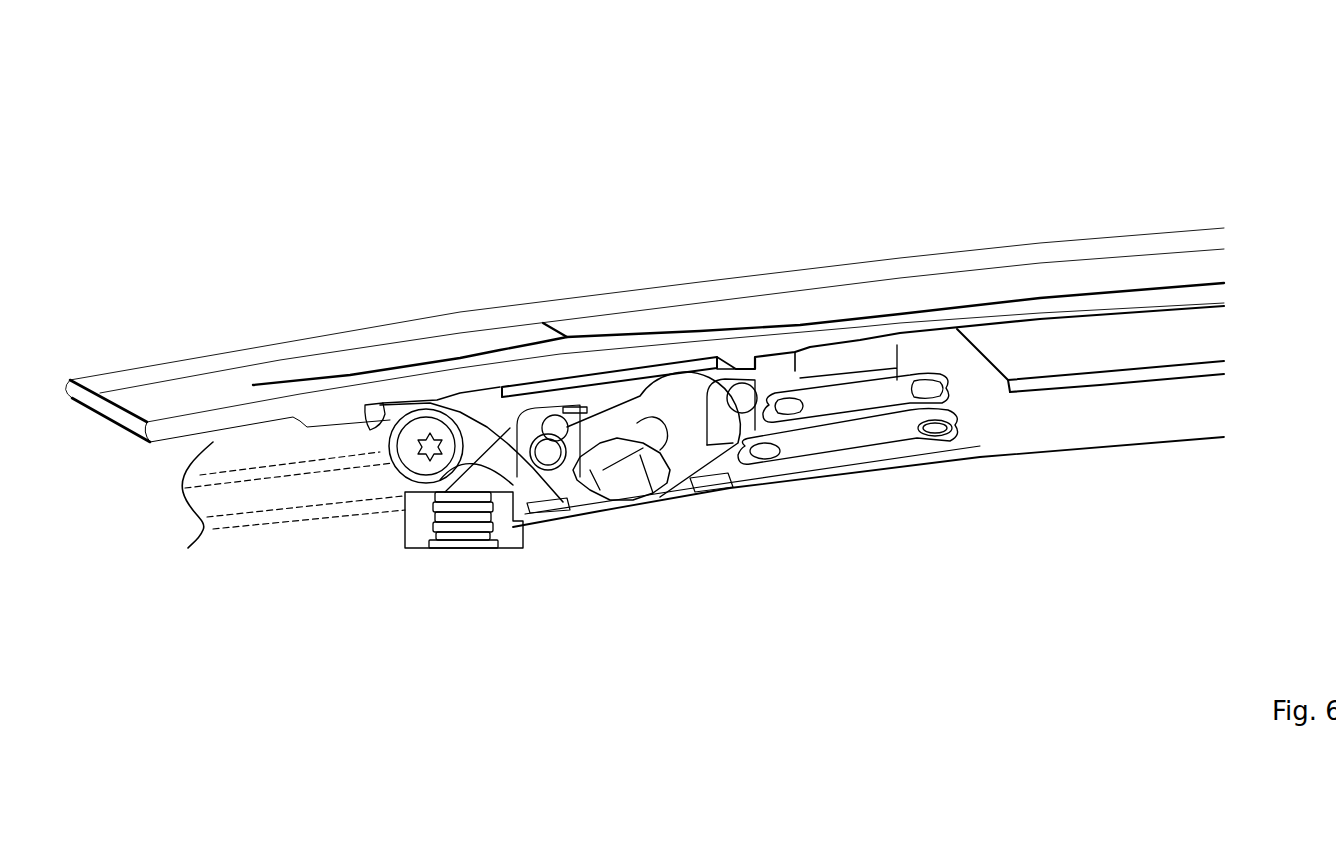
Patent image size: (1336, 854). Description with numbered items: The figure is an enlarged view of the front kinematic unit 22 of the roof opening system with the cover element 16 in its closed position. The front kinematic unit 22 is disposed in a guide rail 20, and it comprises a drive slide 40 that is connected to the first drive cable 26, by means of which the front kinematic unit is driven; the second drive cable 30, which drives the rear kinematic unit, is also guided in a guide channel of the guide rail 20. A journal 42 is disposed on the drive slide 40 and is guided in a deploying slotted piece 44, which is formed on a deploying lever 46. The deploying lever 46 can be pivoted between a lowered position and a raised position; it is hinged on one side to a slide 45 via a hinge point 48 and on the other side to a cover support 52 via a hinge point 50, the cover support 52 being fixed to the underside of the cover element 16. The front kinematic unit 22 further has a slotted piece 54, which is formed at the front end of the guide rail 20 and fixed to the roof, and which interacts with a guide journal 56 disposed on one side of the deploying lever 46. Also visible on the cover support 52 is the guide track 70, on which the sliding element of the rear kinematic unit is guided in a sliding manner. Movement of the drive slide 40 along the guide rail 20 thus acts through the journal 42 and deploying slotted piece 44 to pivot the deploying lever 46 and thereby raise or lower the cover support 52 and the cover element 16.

The cover element 16 is at (587, 300).
The guide rail 20 is at (618, 512).
The front kinematic unit 22 is at (718, 498).
The first drive cable 26 is at (213, 475).
The second drive cable 30 is at (332, 512).
The drive slide 40 is at (827, 363).
The journal 42 is at (553, 420).
The deploying slotted piece 44 is at (587, 405).
The slide 45 is at (770, 368).
The deploying lever 46 is at (477, 427).
The hinge point 48 is at (742, 398).
The hinge point 50 is at (428, 438).
The cover support 52 is at (938, 352).
The slotted piece 54 is at (673, 463).
The guide journal 56 is at (620, 467).
The guide track 70 is at (1078, 368).